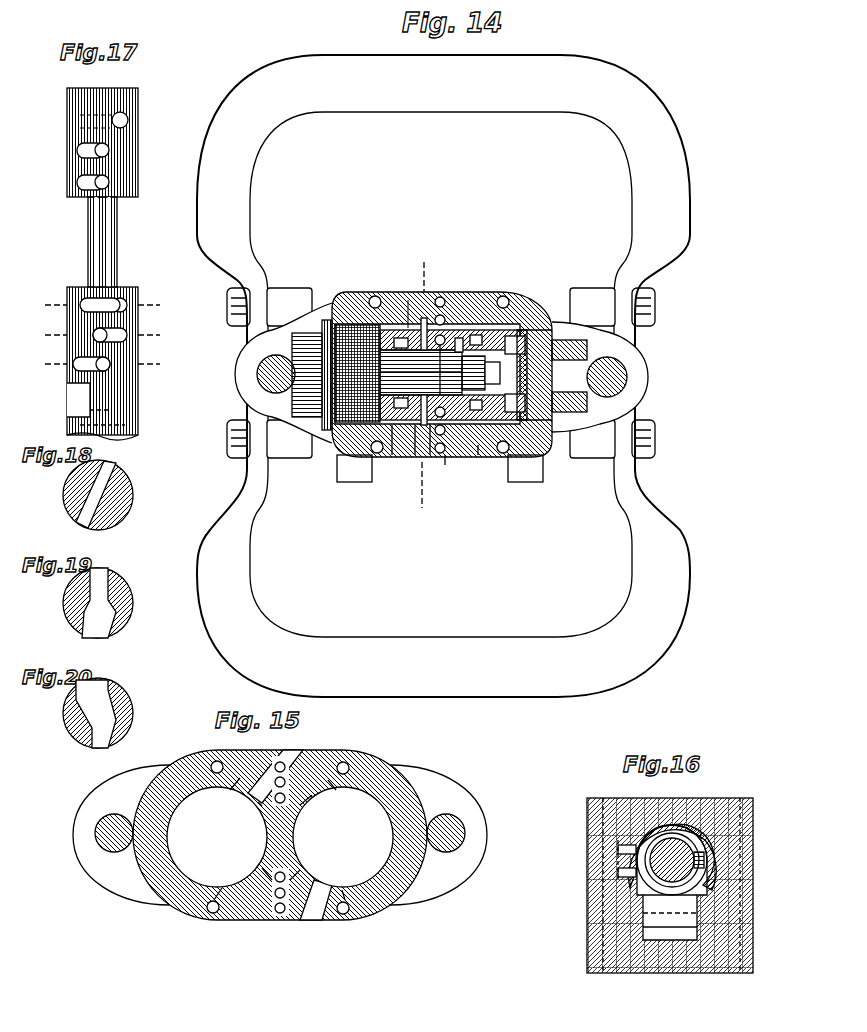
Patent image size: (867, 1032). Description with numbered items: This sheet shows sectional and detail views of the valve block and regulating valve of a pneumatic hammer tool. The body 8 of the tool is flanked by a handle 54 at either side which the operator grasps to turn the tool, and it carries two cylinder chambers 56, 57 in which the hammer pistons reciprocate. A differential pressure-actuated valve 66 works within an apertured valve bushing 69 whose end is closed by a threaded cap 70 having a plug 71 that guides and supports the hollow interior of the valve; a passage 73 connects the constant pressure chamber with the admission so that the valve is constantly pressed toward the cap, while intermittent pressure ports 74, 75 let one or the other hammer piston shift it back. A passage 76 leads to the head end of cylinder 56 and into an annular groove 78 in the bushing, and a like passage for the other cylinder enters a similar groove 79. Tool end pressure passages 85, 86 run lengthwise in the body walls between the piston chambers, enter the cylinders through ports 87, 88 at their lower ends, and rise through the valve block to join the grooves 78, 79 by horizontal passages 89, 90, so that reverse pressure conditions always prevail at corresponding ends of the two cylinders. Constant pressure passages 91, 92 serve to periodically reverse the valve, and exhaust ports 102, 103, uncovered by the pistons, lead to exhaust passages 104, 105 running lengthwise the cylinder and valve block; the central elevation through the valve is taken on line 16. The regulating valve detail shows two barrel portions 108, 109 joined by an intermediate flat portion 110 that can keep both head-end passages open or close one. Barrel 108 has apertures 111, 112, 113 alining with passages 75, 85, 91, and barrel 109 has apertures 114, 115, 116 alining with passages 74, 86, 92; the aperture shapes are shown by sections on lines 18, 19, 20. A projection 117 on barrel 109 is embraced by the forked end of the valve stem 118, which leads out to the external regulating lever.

In FIG. 14, the handle 54 is at (662, 143).
In FIG. 14, the body 8 is at (348, 294).
In FIG. 15, the body 8 is at (173, 769).
In FIG. 14, the threaded cap 70 is at (312, 324).
In FIG. 14, the plug 71 is at (315, 417).
In FIG. 16, the plug 71 is at (696, 852).
In FIG. 14, the valve bushing 69 is at (560, 330).
In FIG. 16, the valve bushing 69 is at (676, 830).
In FIG. 14, the differential pressure-actuated valve 66 is at (560, 425).
In FIG. 16, the differential pressure-actuated valve 66 is at (704, 866).
In FIG. 14, the exhaust passages 104 is at (377, 296).
In FIG. 15, the exhaust passages 104 is at (216, 760).
In FIG. 14, the exhaust passages 105 is at (508, 296).
In FIG. 15, the exhaust passages 105 is at (348, 763).
In FIG. 14, the intermittent pressure port 74 is at (407, 297).
In FIG. 15, the intermittent pressure port 74 is at (296, 756).
In FIG. 14, the horizontal passage 90 is at (439, 296).
In FIG. 16, the horizontal passage 90 is at (618, 849).
In FIG. 14, the tool end pressure passage 86 is at (443, 322).
In FIG. 15, the tool end pressure passage 86 is at (286, 780).
In FIG. 16, the tool end pressure passage 86 is at (622, 970).
In FIG. 14, the constant pressure passage 92 is at (447, 338).
In FIG. 15, the constant pressure passage 92 is at (258, 806).
In FIG. 14, the annular groove 79 is at (462, 327).
In FIG. 14, the passage 73 is at (522, 330).
In FIG. 14, the intermittent pressure port 75 is at (395, 440).
In FIG. 15, the intermittent pressure port 75 is at (295, 918).
In FIG. 14, the annular groove 78 is at (420, 437).
In FIG. 16, the annular groove 78 is at (656, 826).
In FIG. 14, the constant pressure passage 91 is at (432, 445).
In FIG. 15, the constant pressure passage 91 is at (285, 880).
In FIG. 14, the tool end pressure passage 85 is at (449, 458).
In FIG. 15, the tool end pressure passage 85 is at (273, 912).
In FIG. 16, the tool end pressure passage 85 is at (720, 970).
In FIG. 14, the horizontal passage 89 is at (478, 457).
In FIG. 14, the section line 16— 16 is at (421, 382).
In FIG. 15, the cylinder chamber 56 is at (217, 837).
In FIG. 15, the cylinder chamber 57 is at (343, 837).
In FIG. 15, the exhaust ports 102 is at (218, 790).
In FIG. 15, the exhaust ports 103 is at (346, 786).
In FIG. 15, the port 87 is at (262, 870).
In FIG. 15, the port 88 is at (308, 798).
In FIG. 16, the passage 76 is at (672, 940).
In FIG. 17, the barrel portion 108 is at (138, 135).
In FIG. 17, the intermediate flat portion 110 is at (88, 222).
In FIG. 17, the aperture 111 is at (128, 120).
In FIG. 17, the aperture 112 is at (77, 151).
In FIG. 17, the aperture 113 is at (77, 183).
In FIG. 17, the barrel portion 109 is at (136, 376).
In FIG. 18, the barrel portion 109 is at (118, 492).
In FIG. 19, the barrel portion 109 is at (117, 592).
In FIG. 20, the barrel portion 109 is at (120, 700).
In FIG. 17, the aperture 116 is at (120, 298).
In FIG. 18, the aperture 116 is at (103, 488).
In FIG. 17, the aperture 115 is at (115, 335).
In FIG. 19, the aperture 115 is at (106, 580).
In FIG. 17, the aperture 114 is at (108, 363).
In FIG. 20, the aperture 114 is at (105, 690).
In FIG. 17, the projection 117 is at (100, 414).
In FIG. 17, the valve stem 118 is at (125, 428).
In FIG. 17, the section line 18— 18 is at (104, 304).
In FIG. 17, the section line 19— 19 is at (104, 334).
In FIG. 17, the section line 20— 20 is at (104, 363).